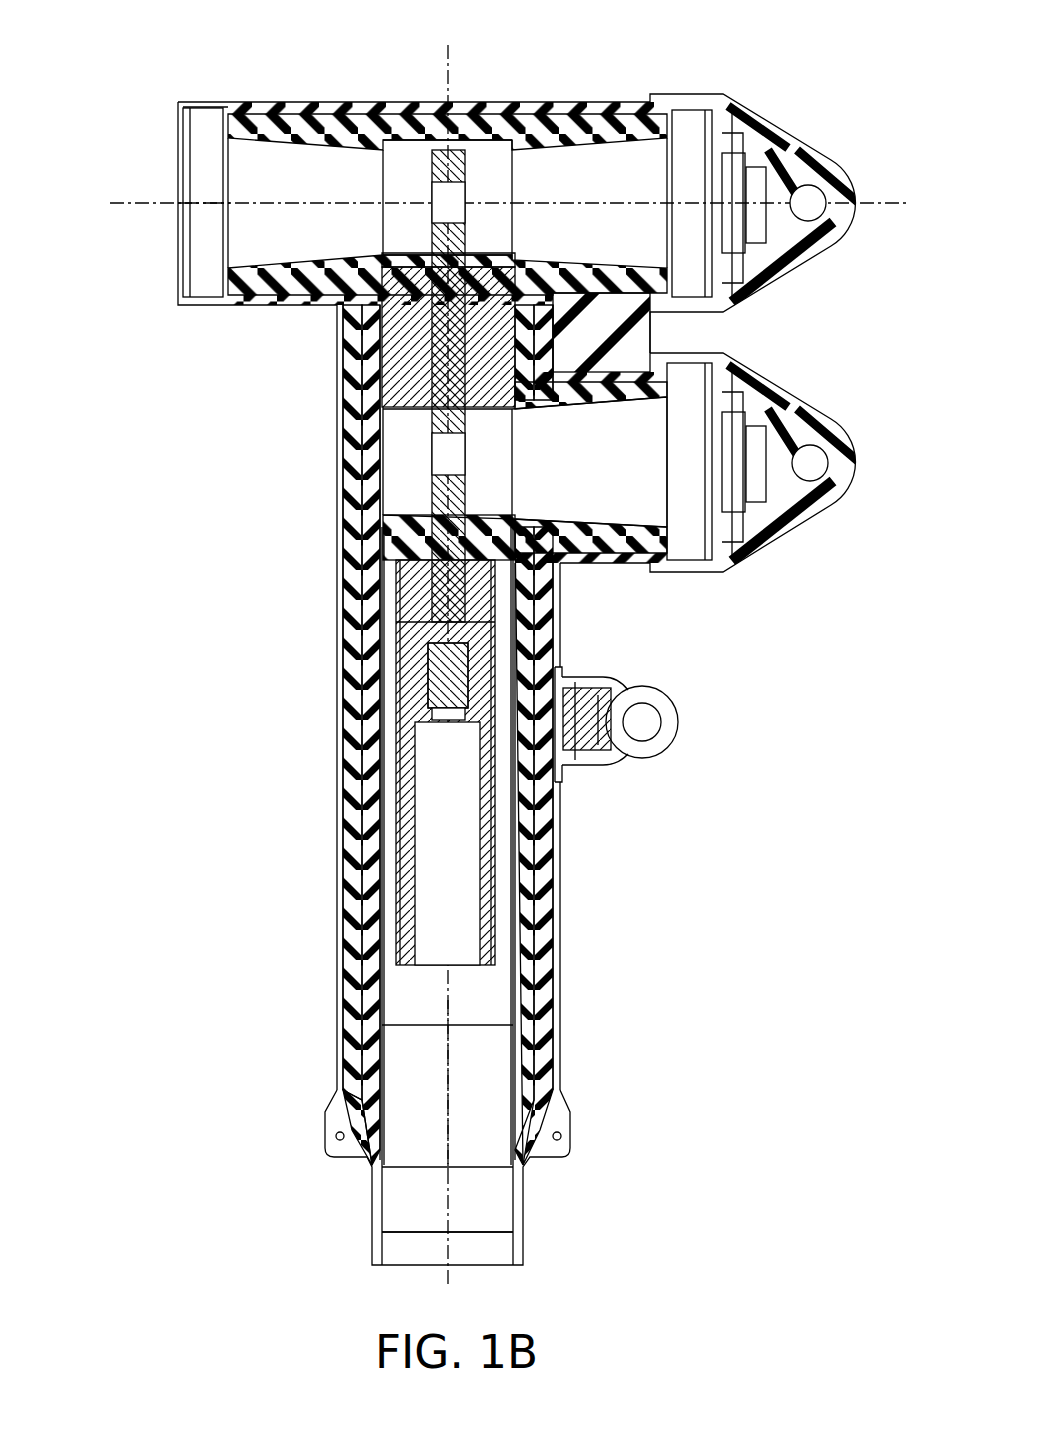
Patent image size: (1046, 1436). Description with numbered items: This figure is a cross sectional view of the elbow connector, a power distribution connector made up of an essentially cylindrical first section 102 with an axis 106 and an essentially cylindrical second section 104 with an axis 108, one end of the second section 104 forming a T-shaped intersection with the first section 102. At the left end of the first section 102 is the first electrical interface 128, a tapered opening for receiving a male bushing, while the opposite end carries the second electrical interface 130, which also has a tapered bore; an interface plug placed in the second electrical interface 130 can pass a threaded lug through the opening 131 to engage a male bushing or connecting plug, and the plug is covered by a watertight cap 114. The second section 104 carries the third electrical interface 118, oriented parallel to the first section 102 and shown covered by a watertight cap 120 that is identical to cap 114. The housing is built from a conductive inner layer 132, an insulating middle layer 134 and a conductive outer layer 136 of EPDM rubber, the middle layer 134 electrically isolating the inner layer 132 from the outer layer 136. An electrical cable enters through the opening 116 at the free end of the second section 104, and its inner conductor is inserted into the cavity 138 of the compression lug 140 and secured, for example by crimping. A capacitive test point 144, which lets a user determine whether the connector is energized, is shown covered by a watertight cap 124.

The first section 102 is at (494, 311).
The second section 104 is at (444, 809).
The axis 106 is at (282, 200).
The axis 108 is at (450, 1017).
The watertight cap 114 is at (797, 152).
The opening 116 is at (372, 1284).
The third electrical interface 118 is at (650, 473).
The watertight cap 120 is at (830, 440).
The watertight cap 124 is at (678, 752).
The first electrical interface 128 is at (198, 222).
The second electrical interface 130 is at (612, 155).
The opening 131 is at (455, 193).
The conductive inner layer 132 is at (522, 928).
The insulating middle layer 134 is at (533, 1028).
The conductive outer layer 136 is at (553, 1097).
The cavity 138 is at (430, 750).
The compression lug 140 is at (363, 762).
The capacitive test point 144 is at (600, 768).